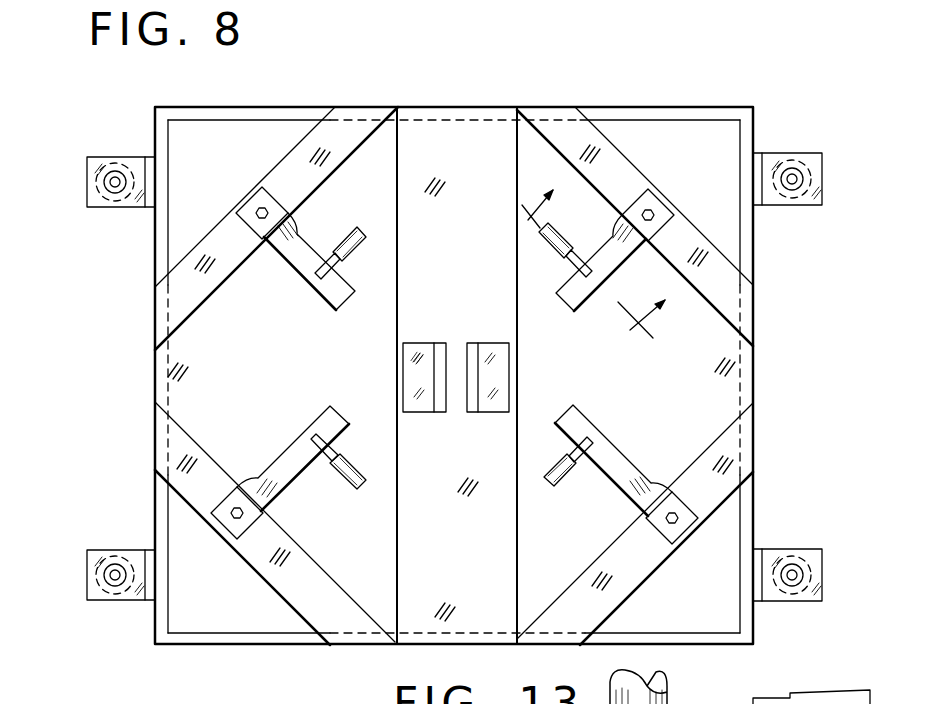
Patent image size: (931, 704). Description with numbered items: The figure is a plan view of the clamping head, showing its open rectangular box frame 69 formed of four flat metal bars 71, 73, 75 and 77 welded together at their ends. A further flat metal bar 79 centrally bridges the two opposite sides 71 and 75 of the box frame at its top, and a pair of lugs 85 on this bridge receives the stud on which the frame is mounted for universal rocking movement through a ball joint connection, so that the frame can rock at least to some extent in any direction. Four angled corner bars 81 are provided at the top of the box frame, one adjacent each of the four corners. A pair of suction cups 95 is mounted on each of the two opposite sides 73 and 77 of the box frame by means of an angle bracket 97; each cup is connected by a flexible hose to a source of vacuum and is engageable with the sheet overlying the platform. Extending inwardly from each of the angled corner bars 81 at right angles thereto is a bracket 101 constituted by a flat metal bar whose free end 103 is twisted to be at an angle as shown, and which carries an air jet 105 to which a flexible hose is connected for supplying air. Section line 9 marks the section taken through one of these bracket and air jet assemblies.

In FIG. 8, the section line 9- 9 is at (582, 275).
In FIG. 8, the open rectangular box frame 69 is at (323, 660).
In FIG. 8, the flat metal bar 71 is at (210, 640).
In FIG. 8, the flat metal bar 73 is at (160, 253).
In FIG. 8, the flat metal bar 75 is at (645, 107).
In FIG. 8, the flat metal bar 77 is at (745, 258).
In FIG. 8, the flat metal bar 79 is at (455, 160).
In FIG. 8, the angled corner bar 81 is at (235, 212).
In FIG. 8, the lug 85 is at (438, 413).
In FIG. 8, the suction cup 95 is at (95, 185).
In FIG. 8, the angle bracket 97 is at (102, 158).
In FIG. 13, the angle bracket 97 is at (753, 698).
In FIG. 8, the bracket 101 is at (277, 192).
In FIG. 8, the free end 103 is at (352, 303).
In FIG. 8, the air jet 105 is at (317, 263).